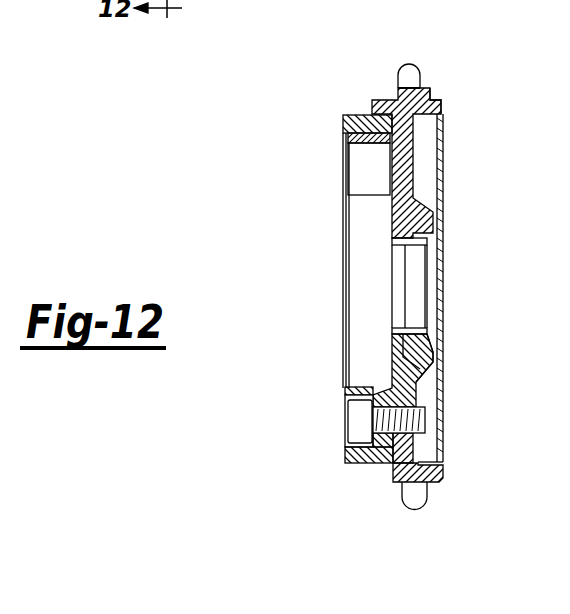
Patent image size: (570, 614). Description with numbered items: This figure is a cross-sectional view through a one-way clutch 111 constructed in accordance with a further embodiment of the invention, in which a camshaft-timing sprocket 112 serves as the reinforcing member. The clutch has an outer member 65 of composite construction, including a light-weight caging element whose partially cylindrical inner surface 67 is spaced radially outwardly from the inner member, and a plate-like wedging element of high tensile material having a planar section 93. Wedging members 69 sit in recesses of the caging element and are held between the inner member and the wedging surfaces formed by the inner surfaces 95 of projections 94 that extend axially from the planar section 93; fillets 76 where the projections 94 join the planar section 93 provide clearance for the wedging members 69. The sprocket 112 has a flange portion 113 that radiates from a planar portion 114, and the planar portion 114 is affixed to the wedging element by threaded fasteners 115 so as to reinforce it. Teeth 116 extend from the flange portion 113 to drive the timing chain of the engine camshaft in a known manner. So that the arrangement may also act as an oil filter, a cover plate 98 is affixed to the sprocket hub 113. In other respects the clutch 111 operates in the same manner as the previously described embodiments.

The outer member 65 is at (358, 466).
The partially cylindrical inner surface 67 is at (370, 388).
The wedging members 69 is at (365, 193).
The fillets 76 is at (385, 152).
The planar section 93 is at (392, 343).
The projections 94 is at (360, 116).
The inner surfaces 95 is at (383, 150).
The cover plate 98 is at (443, 162).
The one-way clutch 111 is at (406, 515).
The sprocket 112 is at (390, 101).
The flange portion 113 is at (432, 97).
The planar portion 114 is at (446, 358).
The threaded fasteners 115 is at (426, 417).
The teeth 116 is at (405, 62).